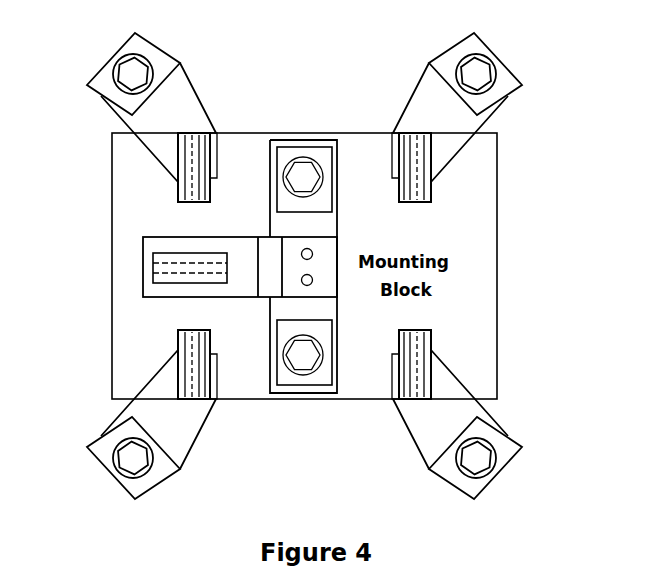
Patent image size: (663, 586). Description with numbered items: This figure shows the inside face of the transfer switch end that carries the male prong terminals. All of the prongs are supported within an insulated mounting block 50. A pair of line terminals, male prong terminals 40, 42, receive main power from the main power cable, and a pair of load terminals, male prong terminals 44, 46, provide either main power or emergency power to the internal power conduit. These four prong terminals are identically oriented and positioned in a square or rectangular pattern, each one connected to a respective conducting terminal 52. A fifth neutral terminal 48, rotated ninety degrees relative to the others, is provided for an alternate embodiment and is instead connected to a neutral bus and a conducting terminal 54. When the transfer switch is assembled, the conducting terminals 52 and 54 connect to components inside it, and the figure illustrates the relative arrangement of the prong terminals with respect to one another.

The male prong terminal 40 is at (177, 193).
The male prong terminal 42 is at (433, 183).
The male prong terminal 44 is at (177, 353).
The male prong terminal 46 is at (433, 342).
The neutral terminal 48 is at (143, 268).
The insulated mounting block 50 is at (257, 133).
The conducting terminal 52 is at (113, 53).
The conducting terminal 54 is at (337, 228).